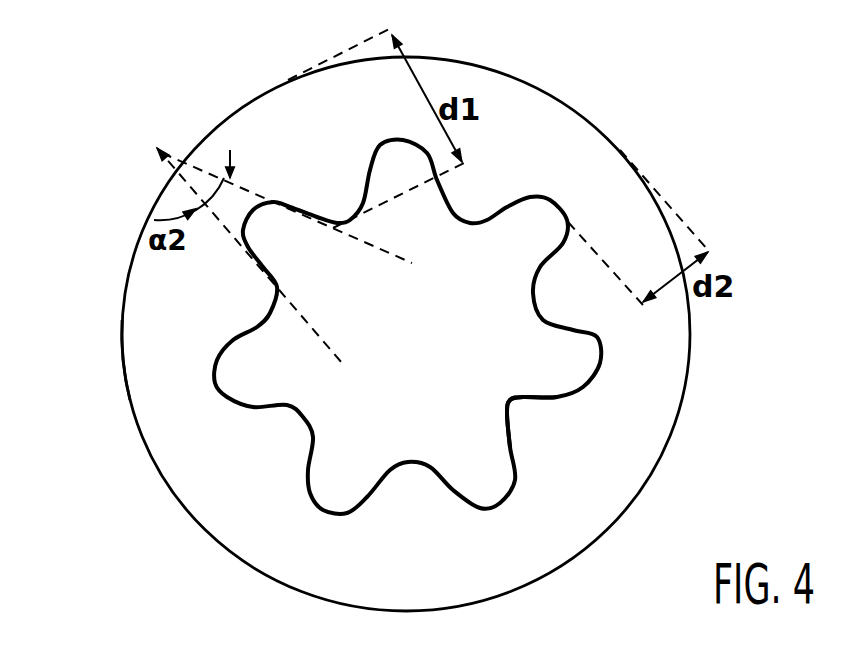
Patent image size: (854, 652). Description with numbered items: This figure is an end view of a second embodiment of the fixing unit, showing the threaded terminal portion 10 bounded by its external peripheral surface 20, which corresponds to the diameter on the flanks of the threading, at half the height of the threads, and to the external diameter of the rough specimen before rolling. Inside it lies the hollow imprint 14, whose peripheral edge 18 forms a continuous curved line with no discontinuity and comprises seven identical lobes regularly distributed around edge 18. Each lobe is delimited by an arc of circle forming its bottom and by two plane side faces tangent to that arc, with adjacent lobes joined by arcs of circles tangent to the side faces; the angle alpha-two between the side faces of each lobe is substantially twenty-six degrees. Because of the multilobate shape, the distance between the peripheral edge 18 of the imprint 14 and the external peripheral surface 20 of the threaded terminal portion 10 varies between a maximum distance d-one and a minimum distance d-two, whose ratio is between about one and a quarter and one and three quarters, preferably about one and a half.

The threaded terminal portion 10 is at (240, 563).
The hollow imprint 14 is at (405, 458).
The peripheral edge 18 is at (540, 397).
The external peripheral surface 20 is at (127, 380).